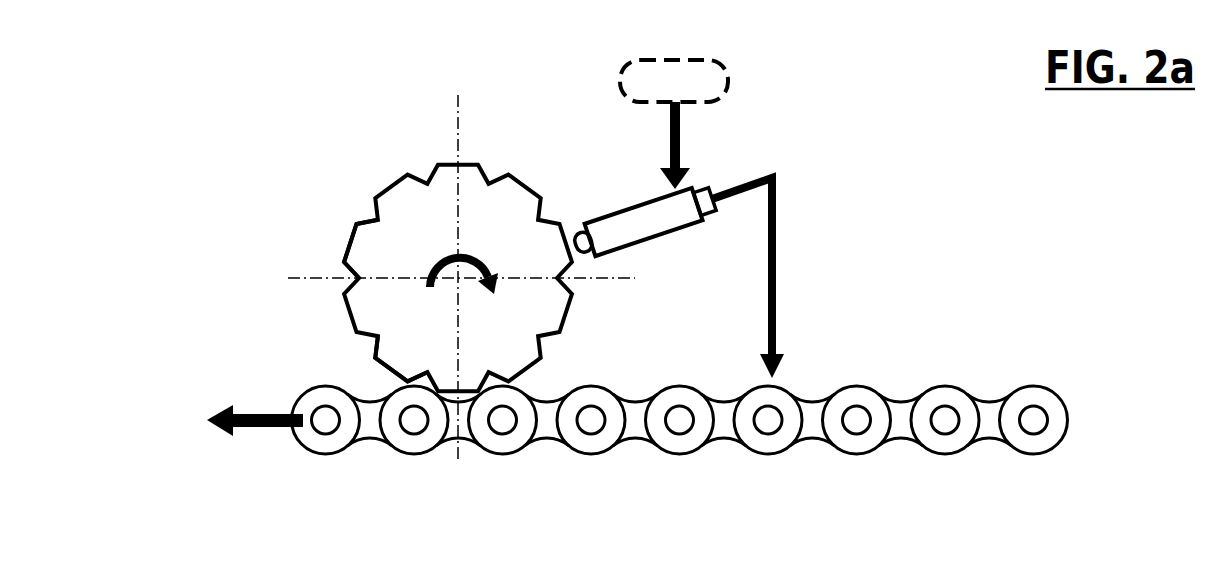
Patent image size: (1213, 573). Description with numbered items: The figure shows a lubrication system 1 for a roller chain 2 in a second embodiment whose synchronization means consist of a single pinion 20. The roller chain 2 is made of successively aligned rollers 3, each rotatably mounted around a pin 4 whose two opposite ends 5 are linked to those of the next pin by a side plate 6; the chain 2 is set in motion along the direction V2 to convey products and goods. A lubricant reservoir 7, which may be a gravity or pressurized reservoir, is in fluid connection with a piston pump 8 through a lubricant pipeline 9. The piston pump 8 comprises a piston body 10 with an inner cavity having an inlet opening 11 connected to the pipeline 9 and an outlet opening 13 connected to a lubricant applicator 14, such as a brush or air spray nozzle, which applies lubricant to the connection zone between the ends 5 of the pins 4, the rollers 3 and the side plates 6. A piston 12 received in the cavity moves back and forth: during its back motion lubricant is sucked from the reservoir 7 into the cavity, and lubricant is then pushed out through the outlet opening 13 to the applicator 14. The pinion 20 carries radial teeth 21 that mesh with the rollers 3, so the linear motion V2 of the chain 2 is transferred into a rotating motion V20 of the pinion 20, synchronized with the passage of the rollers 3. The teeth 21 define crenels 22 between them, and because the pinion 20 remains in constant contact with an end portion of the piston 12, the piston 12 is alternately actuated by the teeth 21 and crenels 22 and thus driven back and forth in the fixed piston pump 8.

The lubrication system 1 is at (428, 236).
The roller chain 2 is at (686, 422).
The roller 3 is at (857, 420).
The pin 4 is at (945, 420).
The end 5 is at (945, 420).
The side plate 6 is at (992, 428).
The lubricant reservoir 7 is at (727, 80).
The piston pump 8 is at (726, 194).
The lubricant pipeline 9 is at (682, 140).
The piston body 10 is at (644, 222).
The inlet opening 11 is at (644, 222).
The piston 12 is at (584, 242).
The outlet opening 13 is at (704, 202).
The lubricant applicator 14 is at (780, 305).
The pinion 20 is at (397, 253).
The tooth 21 is at (358, 245).
The crenel 22 is at (368, 343).
The direction of motion of roller chain V2 is at (255, 436).
The rotating motion of pinion V20 is at (466, 262).